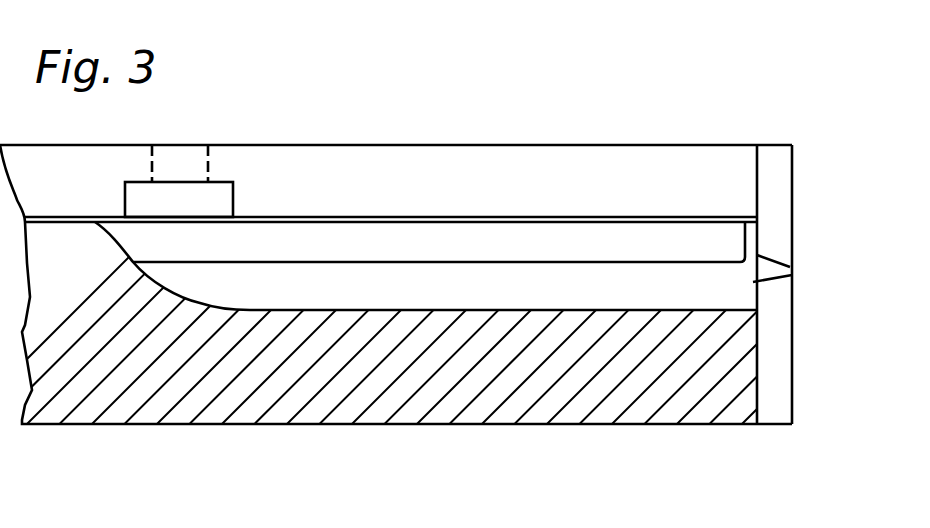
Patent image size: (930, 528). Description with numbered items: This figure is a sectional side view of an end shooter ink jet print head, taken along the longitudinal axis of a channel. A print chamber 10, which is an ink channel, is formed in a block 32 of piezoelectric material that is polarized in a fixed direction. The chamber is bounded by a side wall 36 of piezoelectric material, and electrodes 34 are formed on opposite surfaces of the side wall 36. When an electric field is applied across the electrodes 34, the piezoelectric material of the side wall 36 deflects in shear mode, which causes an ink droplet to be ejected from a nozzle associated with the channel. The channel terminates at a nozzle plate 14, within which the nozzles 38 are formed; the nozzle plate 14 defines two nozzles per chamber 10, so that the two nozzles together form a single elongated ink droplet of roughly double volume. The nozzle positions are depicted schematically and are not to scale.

The print chamber 10 is at (646, 300).
The nozzle plate 14 is at (783, 336).
The block 32 is at (395, 424).
The electrodes 34 is at (442, 264).
The side wall 36 is at (313, 300).
The nozzles 38 is at (788, 258).